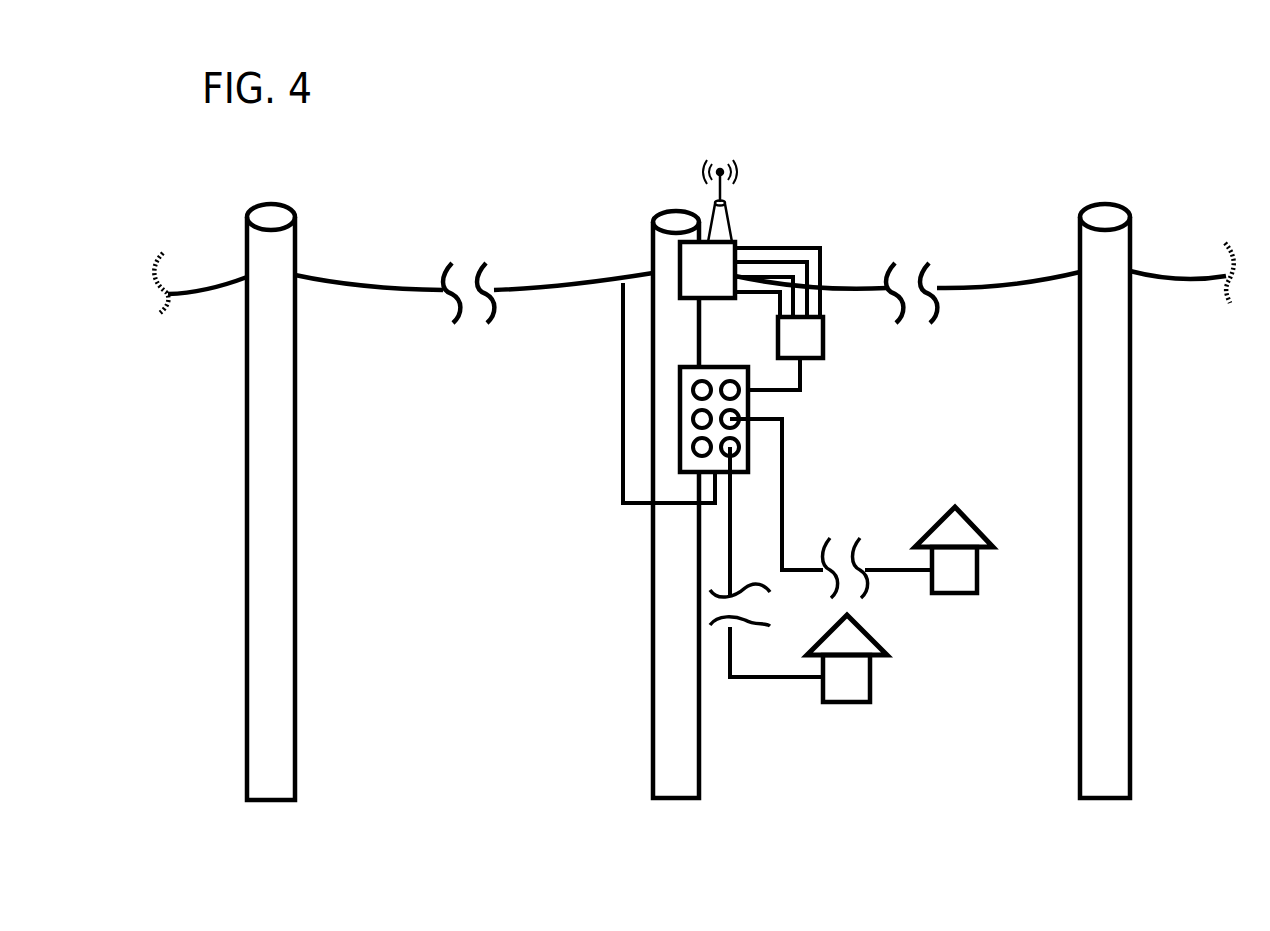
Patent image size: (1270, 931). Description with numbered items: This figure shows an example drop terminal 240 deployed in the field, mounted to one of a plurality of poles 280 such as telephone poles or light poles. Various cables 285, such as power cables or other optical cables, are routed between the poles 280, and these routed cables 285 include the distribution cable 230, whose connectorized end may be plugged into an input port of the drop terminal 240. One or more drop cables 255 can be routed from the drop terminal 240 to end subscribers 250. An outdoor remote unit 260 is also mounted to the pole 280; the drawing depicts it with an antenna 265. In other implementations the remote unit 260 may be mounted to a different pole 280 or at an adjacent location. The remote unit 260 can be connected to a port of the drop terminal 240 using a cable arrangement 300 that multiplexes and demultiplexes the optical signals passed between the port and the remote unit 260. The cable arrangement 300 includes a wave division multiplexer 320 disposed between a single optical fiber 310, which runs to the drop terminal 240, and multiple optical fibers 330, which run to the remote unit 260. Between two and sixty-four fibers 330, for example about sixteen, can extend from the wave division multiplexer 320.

The distribution cable 230 is at (623, 378).
The drop terminal 240 is at (680, 418).
The end subscribers 250 is at (870, 678).
The drop cables 255 is at (768, 677).
The outdoor remote unit 260 is at (680, 268).
The antenna 265 is at (730, 242).
The poles 280 is at (295, 565).
The cables 285 is at (353, 280).
The cable arrangement 300 is at (845, 365).
The single optical fiber 310 is at (800, 392).
The wave division multiplexer 320 is at (823, 337).
The multiple optical fibers 330 is at (820, 245).